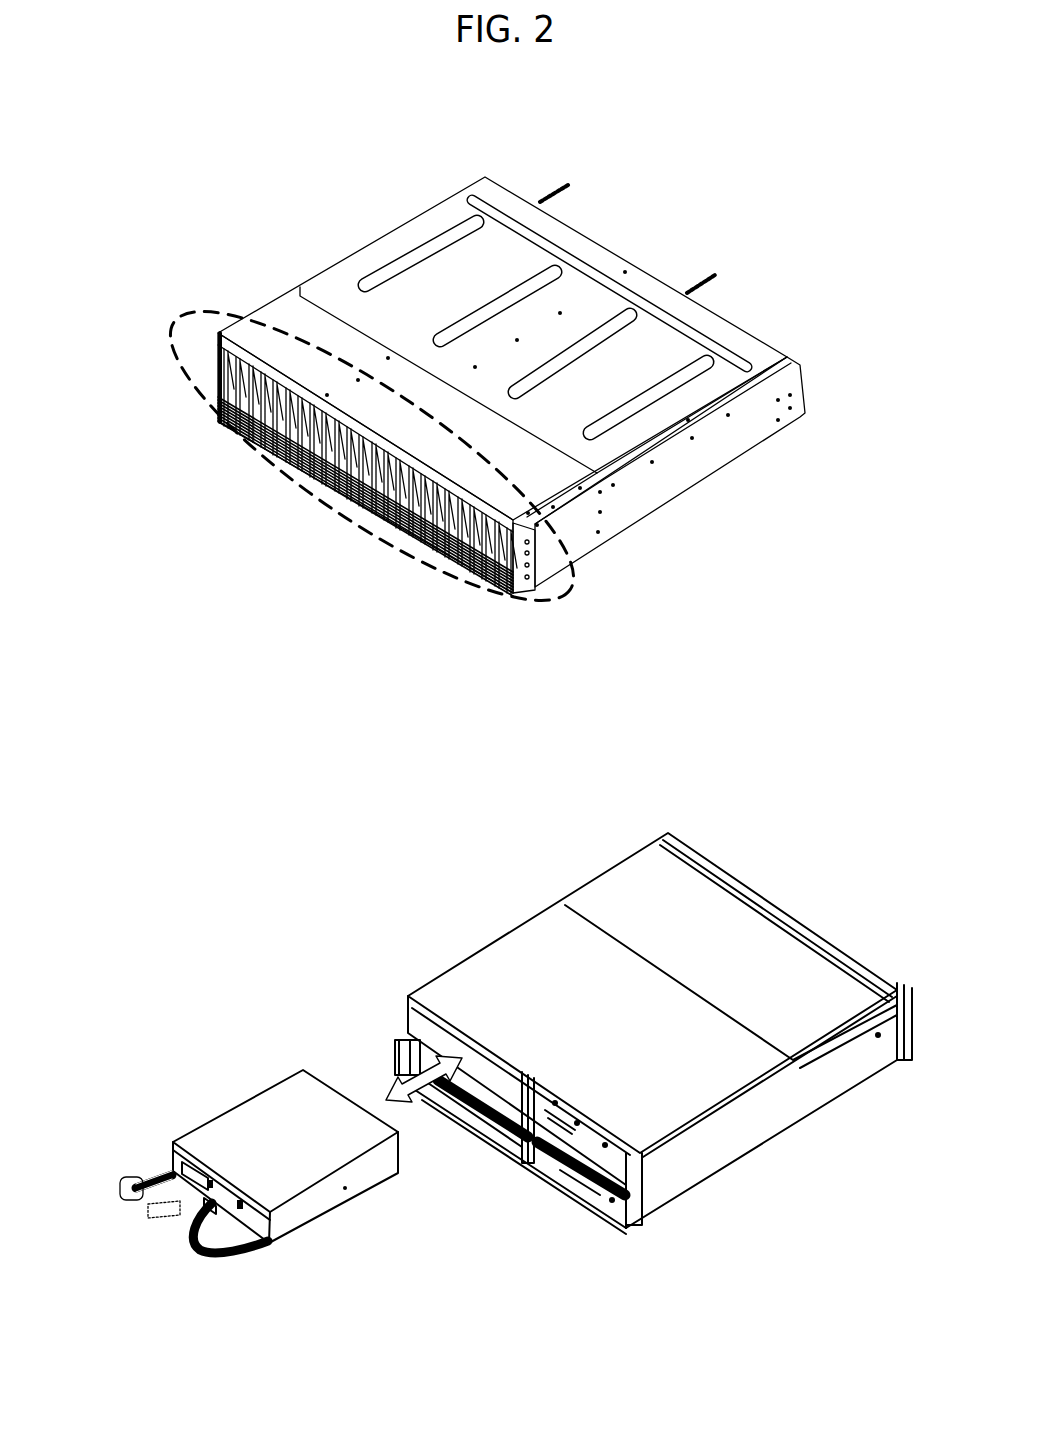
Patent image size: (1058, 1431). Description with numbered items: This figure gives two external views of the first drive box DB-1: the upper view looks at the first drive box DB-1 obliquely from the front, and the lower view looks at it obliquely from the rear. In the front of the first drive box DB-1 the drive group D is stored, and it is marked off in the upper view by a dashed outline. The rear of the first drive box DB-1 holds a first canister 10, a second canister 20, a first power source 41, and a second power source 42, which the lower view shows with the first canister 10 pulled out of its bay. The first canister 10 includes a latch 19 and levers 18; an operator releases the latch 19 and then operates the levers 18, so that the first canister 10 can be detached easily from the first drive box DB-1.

The first drive box DB-1 is at (486, 174).
The drive group D is at (198, 313).
The first canister 10 is at (262, 1117).
The levers 18 is at (132, 1173).
The latch 19 is at (210, 1207).
The second canister 20 is at (552, 1123).
The first power source 41 is at (397, 1055).
The second power source 42 is at (583, 1180).